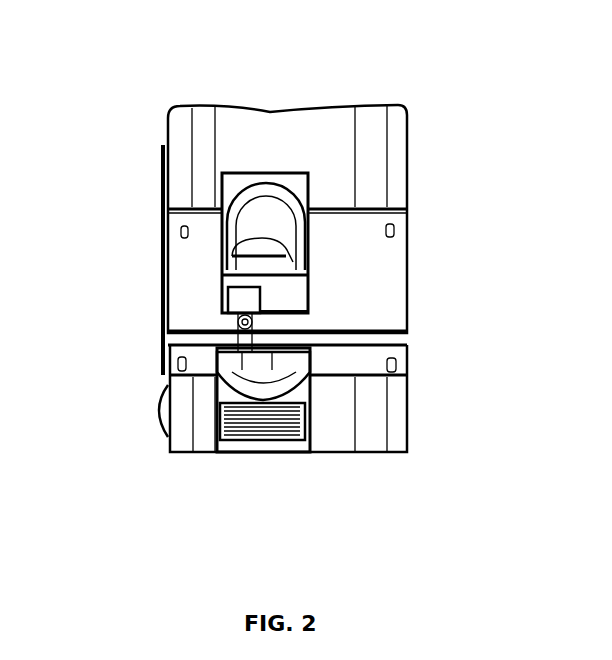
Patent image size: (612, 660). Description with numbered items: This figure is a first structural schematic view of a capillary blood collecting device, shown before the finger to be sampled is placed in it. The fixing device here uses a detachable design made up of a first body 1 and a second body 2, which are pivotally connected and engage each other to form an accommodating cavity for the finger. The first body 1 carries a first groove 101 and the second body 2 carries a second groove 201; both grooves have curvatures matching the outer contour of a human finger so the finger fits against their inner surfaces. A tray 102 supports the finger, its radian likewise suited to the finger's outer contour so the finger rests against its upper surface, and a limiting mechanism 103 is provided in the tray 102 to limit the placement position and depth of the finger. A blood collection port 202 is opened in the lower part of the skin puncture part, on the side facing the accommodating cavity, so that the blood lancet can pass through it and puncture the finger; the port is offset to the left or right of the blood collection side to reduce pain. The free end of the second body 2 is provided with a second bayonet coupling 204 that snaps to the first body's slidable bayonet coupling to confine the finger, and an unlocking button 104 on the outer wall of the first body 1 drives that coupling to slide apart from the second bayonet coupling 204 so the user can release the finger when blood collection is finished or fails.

The first body 1 is at (172, 450).
The second body 2 is at (398, 132).
The first groove 101 is at (247, 442).
The tray 102 is at (298, 412).
The limiting mechanism 103 is at (267, 358).
The unlocking button 104 is at (154, 407).
The second groove 201 is at (264, 190).
The blood collection port 202 is at (240, 299).
The second bayonet coupling 204 is at (390, 230).